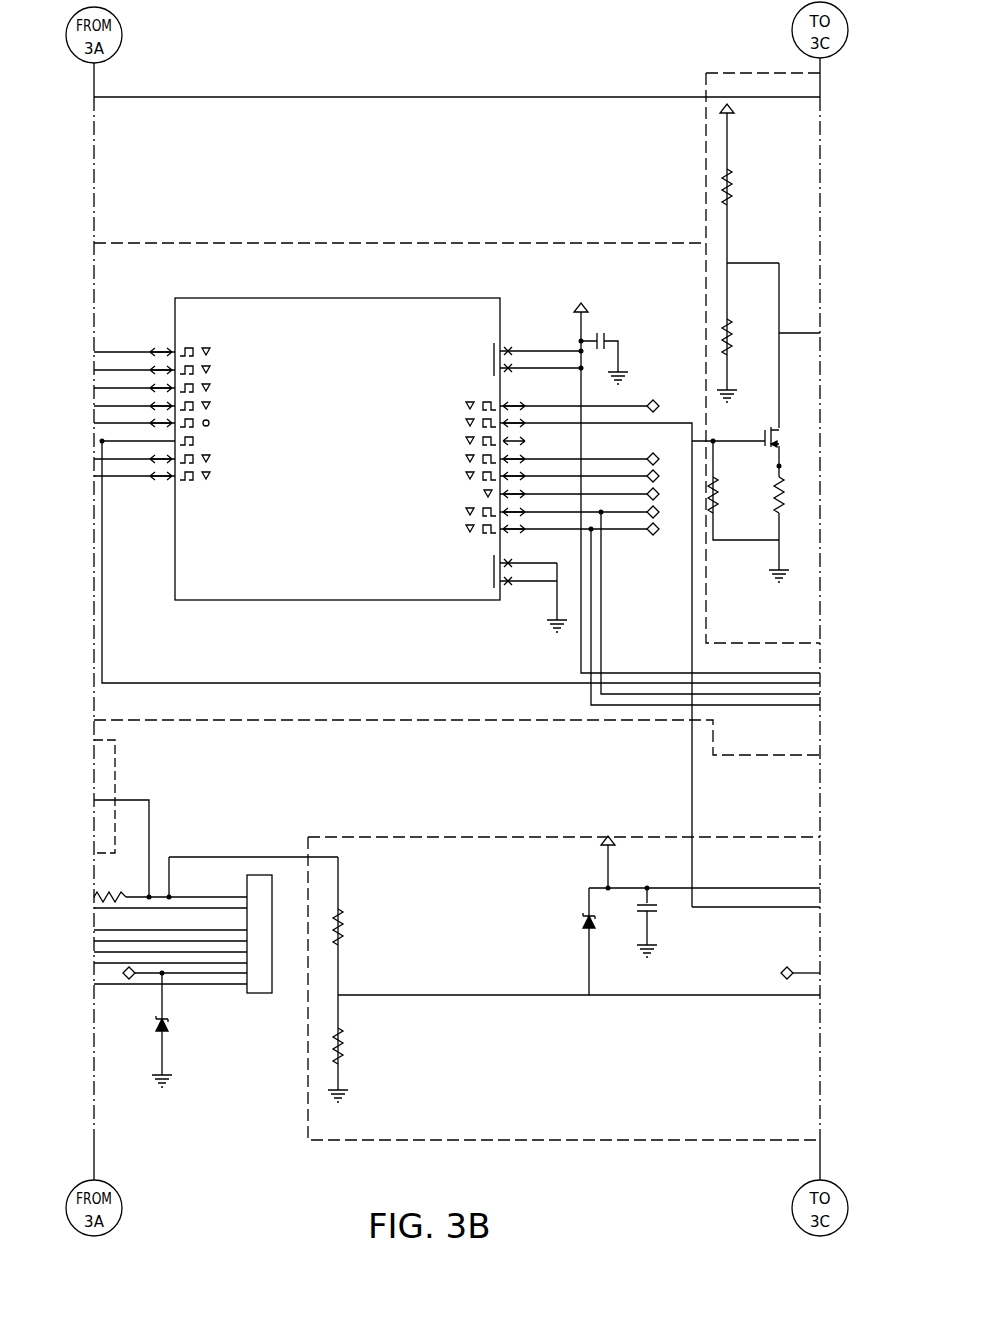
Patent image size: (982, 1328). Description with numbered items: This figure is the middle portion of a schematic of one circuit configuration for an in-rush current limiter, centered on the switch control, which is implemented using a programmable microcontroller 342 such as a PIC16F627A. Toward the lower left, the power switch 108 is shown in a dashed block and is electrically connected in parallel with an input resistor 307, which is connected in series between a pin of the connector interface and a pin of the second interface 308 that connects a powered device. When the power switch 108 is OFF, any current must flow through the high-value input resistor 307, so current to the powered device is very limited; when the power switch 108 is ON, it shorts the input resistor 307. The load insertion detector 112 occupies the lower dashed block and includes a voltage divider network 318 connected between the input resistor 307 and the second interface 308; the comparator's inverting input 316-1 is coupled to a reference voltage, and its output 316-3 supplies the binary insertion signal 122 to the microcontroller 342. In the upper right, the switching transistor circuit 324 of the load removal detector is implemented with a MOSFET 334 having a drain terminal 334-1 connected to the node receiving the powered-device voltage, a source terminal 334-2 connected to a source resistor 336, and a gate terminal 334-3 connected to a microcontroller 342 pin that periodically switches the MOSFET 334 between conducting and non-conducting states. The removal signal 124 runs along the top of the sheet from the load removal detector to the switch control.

The removal signal 124 is at (405, 97).
The programmable microcontroller 342 is at (460, 298).
The switching transistor circuit 324 is at (786, 313).
The MOSFET 334 is at (782, 437).
The drain terminal 334-1 is at (779, 378).
The source terminal 334-2 is at (781, 466).
The gate terminal 334-3 is at (720, 440).
The source resistor 336 is at (786, 497).
The power switch 108 is at (124, 777).
The input resistor 307 is at (113, 893).
The second interface 308 is at (257, 993).
The voltage divider network 318 is at (365, 965).
The insertion signal 122 is at (692, 792).
The output 316-3 is at (750, 907).
The inverting input 316-1 is at (787, 967).
The load insertion detector 112 is at (337, 1142).